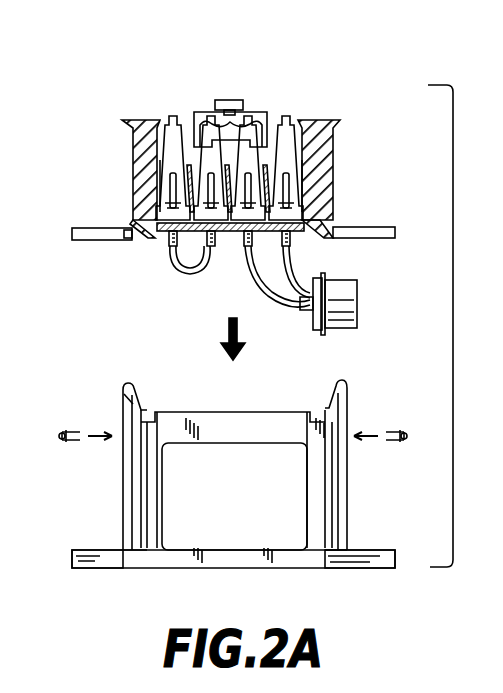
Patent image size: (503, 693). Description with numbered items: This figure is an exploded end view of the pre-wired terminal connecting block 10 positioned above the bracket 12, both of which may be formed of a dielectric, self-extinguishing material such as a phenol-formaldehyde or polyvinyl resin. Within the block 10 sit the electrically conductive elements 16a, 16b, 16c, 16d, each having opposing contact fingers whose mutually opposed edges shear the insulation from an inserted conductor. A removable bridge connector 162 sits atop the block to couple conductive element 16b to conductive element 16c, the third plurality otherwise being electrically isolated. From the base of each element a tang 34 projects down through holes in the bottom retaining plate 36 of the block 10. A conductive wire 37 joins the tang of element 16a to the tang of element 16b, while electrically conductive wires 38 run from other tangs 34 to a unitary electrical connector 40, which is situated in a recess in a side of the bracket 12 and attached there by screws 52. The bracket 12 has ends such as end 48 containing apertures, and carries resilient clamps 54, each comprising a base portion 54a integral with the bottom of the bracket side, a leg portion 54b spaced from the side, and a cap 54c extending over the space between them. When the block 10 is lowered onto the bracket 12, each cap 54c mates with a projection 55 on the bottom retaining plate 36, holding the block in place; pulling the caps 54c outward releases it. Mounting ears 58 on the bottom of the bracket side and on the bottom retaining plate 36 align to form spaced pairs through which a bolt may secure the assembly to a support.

The terminal connecting block 10 is at (352, 160).
The bracket 12 is at (367, 479).
The conductive element 16a is at (172, 116).
The conductive element 16b is at (210, 116).
The conductive element 16c is at (250, 116).
The conductive element 16d is at (286, 116).
The bridge connector 162 is at (232, 100).
The tang 34 is at (169, 250).
The bottom retaining plate 36 is at (226, 246).
The conductive wire 37 is at (172, 274).
The electrically conductive wire 38 is at (283, 246).
The unitary electrical connector 40 is at (356, 298).
The end of the bracket 48 is at (236, 430).
The screw 52 is at (66, 433).
The clamp 54 is at (344, 398).
The base portion 54a is at (128, 556).
The leg portion 54b is at (132, 530).
The cap 54c is at (128, 392).
The projection 55 is at (124, 230).
The mounting ear 58 is at (72, 234).